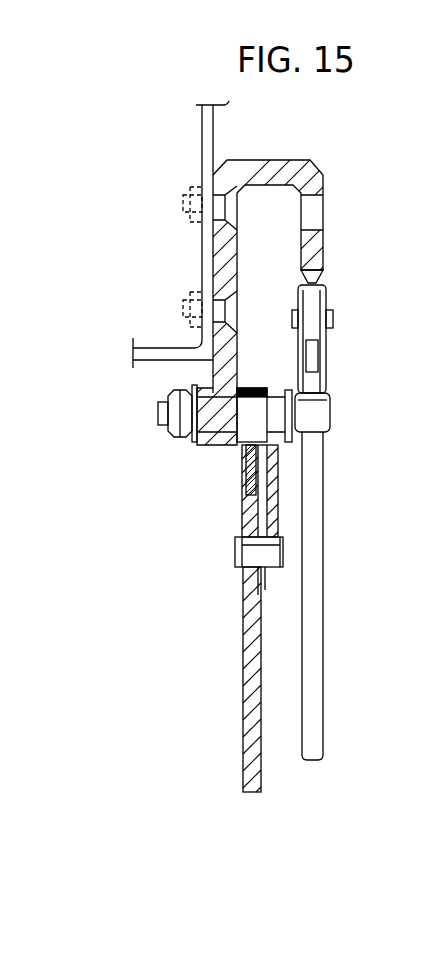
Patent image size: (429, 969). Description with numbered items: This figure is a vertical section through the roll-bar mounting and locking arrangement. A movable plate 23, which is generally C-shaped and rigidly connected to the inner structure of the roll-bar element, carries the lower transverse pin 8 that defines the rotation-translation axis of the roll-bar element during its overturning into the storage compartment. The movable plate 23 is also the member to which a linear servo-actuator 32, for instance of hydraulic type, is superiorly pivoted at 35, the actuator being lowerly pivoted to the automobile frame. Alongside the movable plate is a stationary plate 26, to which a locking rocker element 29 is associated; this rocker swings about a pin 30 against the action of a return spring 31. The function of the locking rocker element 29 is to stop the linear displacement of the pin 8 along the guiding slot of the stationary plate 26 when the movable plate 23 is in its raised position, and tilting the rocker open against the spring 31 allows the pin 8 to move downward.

The movable plate 23 is at (338, 216).
The lower transverse pin 8 is at (249, 406).
The upper pivot of servo-actuator 35 is at (334, 318).
The linear servo-actuator 32 is at (313, 583).
The locking rocker element 29 is at (280, 483).
The pin 30 is at (269, 568).
The return spring 31 is at (258, 592).
The stationary plate 26 is at (243, 712).